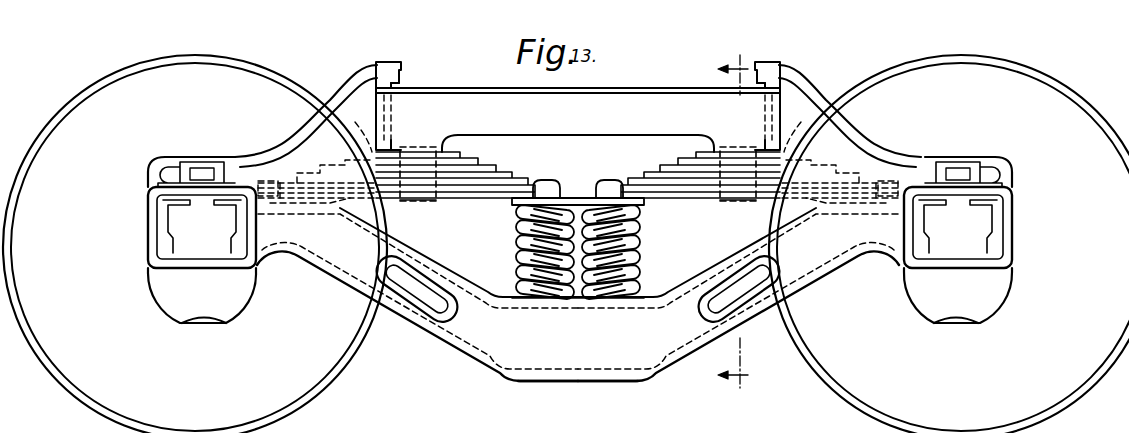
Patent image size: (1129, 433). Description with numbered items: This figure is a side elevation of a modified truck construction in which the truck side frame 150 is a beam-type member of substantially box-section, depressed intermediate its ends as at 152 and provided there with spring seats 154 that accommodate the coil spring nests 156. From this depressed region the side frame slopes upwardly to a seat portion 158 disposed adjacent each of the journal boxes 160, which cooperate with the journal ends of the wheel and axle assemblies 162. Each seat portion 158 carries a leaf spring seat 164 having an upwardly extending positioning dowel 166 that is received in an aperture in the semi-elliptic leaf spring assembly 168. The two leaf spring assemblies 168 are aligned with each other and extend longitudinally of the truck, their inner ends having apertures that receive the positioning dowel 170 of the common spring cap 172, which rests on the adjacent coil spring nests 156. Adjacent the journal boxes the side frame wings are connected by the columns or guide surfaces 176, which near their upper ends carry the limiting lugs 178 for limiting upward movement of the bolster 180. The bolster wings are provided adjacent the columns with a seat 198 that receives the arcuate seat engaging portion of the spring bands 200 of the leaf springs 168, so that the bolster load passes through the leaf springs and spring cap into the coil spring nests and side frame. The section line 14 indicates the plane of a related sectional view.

The section line 14- 14 is at (734, 221).
The truck side frame 150 is at (452, 338).
The depressed portion of side frame 152 is at (568, 363).
The spring seats 154 is at (610, 300).
The coil spring nests 156 is at (517, 250).
The seat portion 158 is at (305, 212).
The journal boxes 160 is at (163, 275).
The wheel and axle assemblies 162 is at (72, 131).
The leaf spring seat 164 is at (300, 197).
The positioning dowel 166 is at (287, 180).
The semi-elliptic leaf spring assembly 168 is at (517, 168).
The positioning dowel of spring cap 170 is at (607, 177).
The common spring cap 172 is at (510, 202).
The columns or guide surfaces 176 is at (396, 80).
The limiting lugs 178 is at (389, 61).
The bolster 180 is at (475, 97).
The seat 198 is at (415, 146).
The spring bands 200 is at (418, 203).